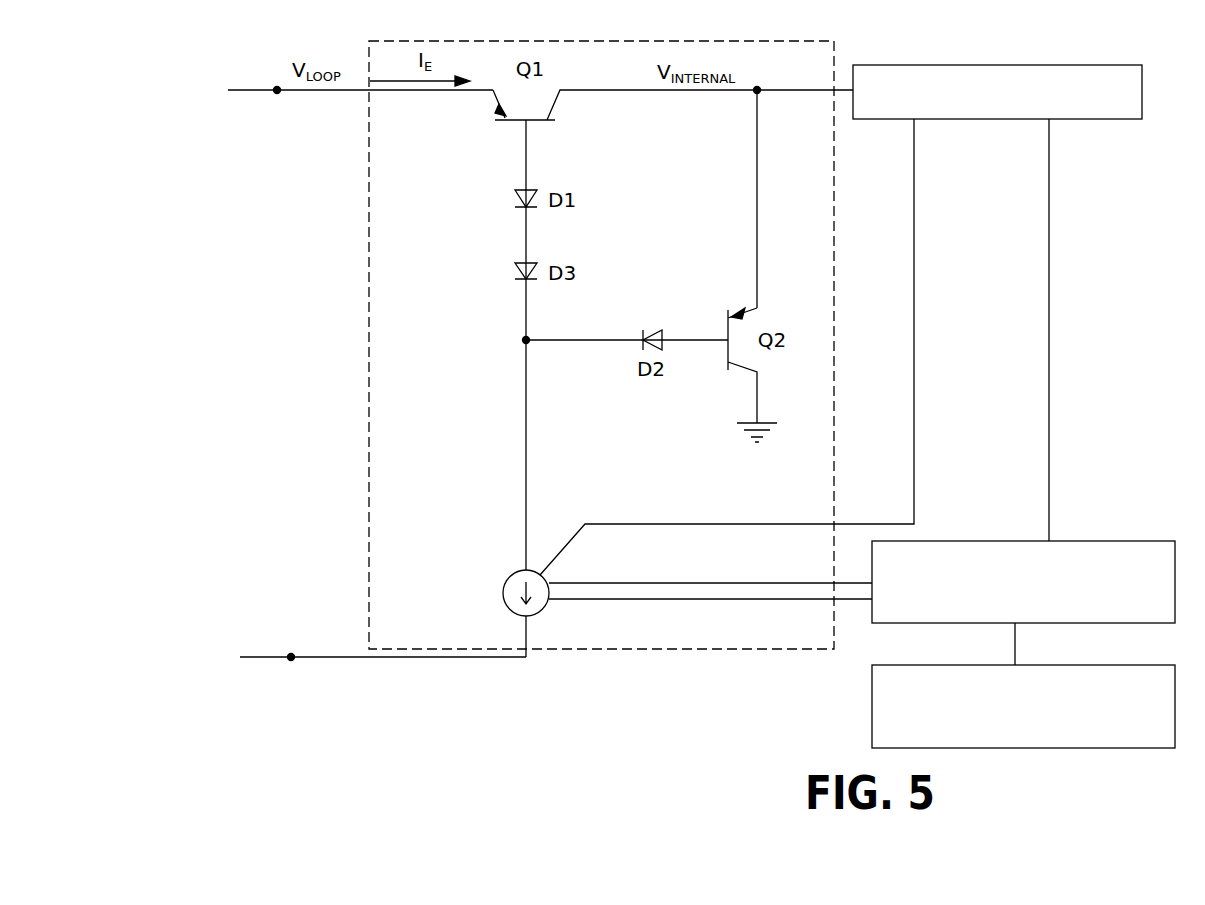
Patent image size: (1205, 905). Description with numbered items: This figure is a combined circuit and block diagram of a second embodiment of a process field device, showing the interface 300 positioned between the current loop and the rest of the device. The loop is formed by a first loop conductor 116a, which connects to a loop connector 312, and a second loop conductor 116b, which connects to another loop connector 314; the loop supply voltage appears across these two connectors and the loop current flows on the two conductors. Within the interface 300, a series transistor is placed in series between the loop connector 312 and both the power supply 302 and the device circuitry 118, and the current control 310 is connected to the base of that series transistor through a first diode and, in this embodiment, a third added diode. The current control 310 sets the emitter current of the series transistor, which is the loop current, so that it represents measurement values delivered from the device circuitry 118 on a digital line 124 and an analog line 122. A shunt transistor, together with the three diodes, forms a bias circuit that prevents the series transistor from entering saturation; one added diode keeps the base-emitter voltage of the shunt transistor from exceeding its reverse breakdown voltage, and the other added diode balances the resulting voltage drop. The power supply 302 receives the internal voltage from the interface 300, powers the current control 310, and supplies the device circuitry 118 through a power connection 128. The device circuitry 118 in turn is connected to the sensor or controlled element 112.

The loop conductor 116a is at (277, 90).
The loop conductor 116b is at (258, 655).
The loop connector 312 is at (277, 91).
The loop connector 314 is at (291, 655).
The interface 300 is at (369, 256).
The power supply 302 is at (1118, 118).
The power connection 128 is at (1049, 372).
The current control 310 is at (510, 575).
The digital line 124 is at (755, 583).
The analog line 122 is at (736, 600).
The device circuitry 118 is at (1023, 582).
The sensor 112 is at (1023, 706).